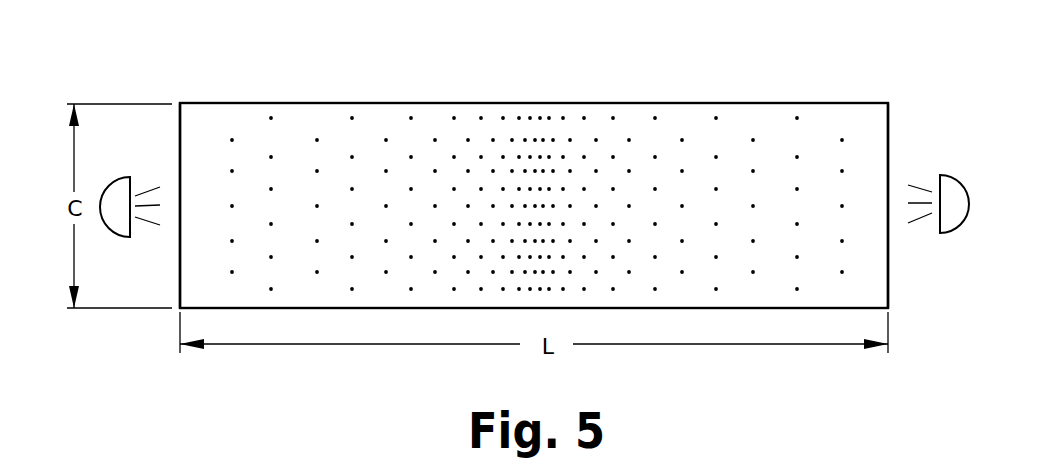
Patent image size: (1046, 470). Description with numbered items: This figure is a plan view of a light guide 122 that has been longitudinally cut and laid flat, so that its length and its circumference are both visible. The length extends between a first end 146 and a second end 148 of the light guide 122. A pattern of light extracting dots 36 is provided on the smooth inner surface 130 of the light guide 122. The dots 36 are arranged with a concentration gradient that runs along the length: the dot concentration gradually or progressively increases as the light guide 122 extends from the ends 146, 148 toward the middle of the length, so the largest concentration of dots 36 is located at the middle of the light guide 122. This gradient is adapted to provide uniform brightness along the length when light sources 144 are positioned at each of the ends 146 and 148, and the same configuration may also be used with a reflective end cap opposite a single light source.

The light guide 122 is at (525, 158).
The smooth inner surface 130 is at (245, 123).
The light extracting dots 36 is at (410, 118).
The first end 146 is at (890, 145).
The second end 148 is at (180, 283).
The light source 144 is at (113, 190).